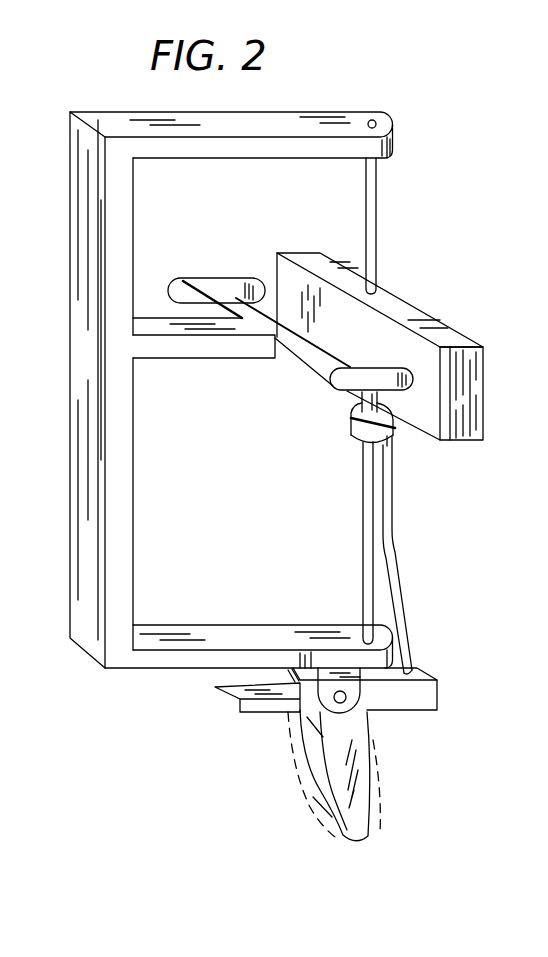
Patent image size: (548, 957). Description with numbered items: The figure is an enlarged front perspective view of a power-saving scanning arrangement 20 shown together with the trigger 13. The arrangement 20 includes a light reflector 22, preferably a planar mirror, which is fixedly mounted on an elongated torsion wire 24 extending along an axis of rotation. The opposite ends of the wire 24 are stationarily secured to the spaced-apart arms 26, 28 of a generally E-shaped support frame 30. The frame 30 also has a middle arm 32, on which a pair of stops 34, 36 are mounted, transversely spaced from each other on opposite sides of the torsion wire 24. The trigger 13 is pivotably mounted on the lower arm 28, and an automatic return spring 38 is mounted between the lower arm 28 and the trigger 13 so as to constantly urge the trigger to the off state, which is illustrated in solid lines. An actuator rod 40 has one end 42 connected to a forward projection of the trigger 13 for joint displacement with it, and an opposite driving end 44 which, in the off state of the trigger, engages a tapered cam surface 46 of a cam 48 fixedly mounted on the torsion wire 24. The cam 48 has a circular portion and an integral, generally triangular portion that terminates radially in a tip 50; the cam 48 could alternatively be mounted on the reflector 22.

The trigger 13 is at (446, 690).
The power-saving scanning arrangement 20 is at (451, 199).
The light reflector 22 is at (484, 380).
The torsion wire 24 is at (378, 246).
The upper arm of support frame 26 is at (393, 121).
The lower arm of support frame 28 is at (357, 637).
The support frame 30 is at (144, 444).
The middle arm 32 is at (185, 350).
The stop 34 is at (247, 280).
The stop 36 is at (388, 373).
The automatic return spring 38 is at (220, 686).
The actuator rod 40 is at (408, 587).
The end of actuator rod 42 is at (412, 647).
The driving end of actuator rod 44 is at (393, 498).
The tapered cam surface 46 is at (362, 437).
The cam 48 is at (346, 428).
The tip 50 is at (395, 430).